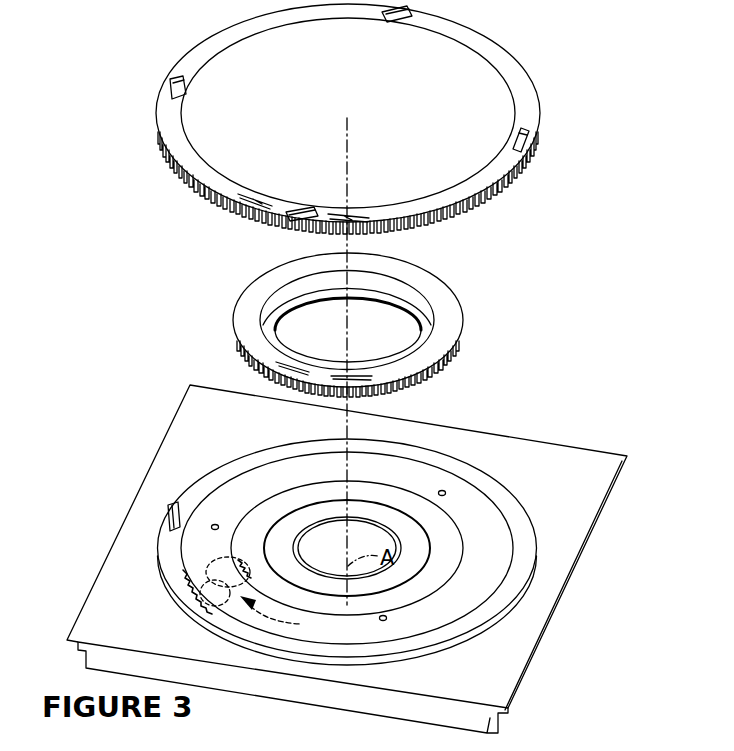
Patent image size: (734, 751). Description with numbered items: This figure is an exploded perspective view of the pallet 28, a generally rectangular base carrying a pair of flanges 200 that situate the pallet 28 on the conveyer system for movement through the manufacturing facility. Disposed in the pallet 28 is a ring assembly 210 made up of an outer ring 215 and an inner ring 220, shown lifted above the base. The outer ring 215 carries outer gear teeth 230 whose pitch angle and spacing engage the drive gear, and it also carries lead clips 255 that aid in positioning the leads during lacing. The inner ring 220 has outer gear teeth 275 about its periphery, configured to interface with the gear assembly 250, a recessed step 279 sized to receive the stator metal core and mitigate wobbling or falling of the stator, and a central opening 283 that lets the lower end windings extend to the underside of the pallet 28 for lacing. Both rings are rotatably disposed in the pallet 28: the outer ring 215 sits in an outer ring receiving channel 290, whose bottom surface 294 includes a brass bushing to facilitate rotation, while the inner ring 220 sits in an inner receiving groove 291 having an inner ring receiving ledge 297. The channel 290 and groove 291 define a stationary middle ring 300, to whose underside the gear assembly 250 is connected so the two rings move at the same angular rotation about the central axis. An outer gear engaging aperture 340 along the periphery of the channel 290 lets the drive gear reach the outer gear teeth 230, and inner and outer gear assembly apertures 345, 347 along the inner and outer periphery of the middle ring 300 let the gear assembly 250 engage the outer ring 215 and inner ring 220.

The pallet 28 is at (528, 626).
The flanges 200 is at (75, 652).
The ring assembly 210 is at (622, 115).
The outer ring 215 is at (530, 50).
The inner ring 220 is at (440, 266).
The outer gear teeth 230 is at (232, 213).
The gear assembly 250 is at (291, 617).
The lead clips 255 is at (168, 85).
The outer gear teeth 275 is at (410, 385).
The recessed step 279 is at (266, 328).
The opening 283 is at (322, 302).
The outer ring receiving channel 290 is at (524, 577).
The inner receiving groove 291 is at (305, 482).
The bottom surface 294 is at (530, 548).
The inner ring receiving ledge 297 is at (282, 522).
The stationary middle ring 300 is at (497, 527).
The outer gear engaging aperture 340 is at (170, 507).
The inner gear assembly aperture 345 is at (212, 608).
The outer gear assembly aperture 347 is at (252, 573).